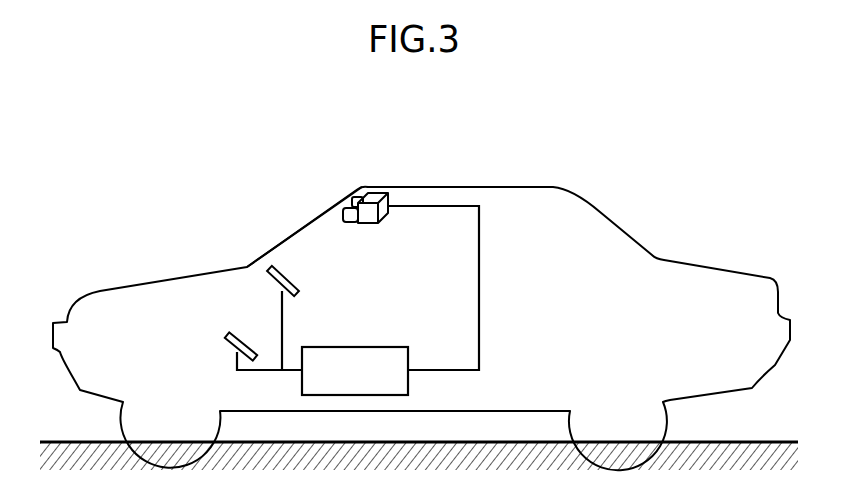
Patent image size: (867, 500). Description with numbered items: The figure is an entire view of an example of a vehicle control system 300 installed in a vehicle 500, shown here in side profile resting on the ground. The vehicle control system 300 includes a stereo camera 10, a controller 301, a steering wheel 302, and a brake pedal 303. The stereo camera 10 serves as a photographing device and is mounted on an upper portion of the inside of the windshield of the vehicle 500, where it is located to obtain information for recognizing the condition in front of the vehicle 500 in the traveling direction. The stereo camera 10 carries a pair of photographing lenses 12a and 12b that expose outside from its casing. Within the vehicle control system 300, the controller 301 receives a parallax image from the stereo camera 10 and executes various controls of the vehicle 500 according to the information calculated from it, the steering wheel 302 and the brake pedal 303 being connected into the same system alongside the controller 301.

The vehicle 500 is at (518, 188).
The stereo camera 10 is at (393, 223).
The photographing lens 12a is at (360, 188).
The photographing lens 12b is at (340, 212).
The vehicle control system 300 is at (495, 267).
The controller 301 is at (353, 347).
The steering wheel 302 is at (308, 262).
The brake pedal 303 is at (258, 327).